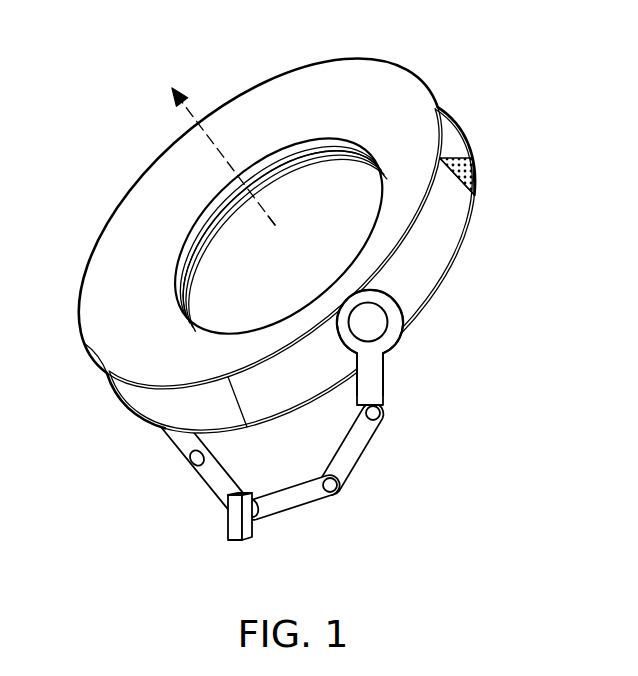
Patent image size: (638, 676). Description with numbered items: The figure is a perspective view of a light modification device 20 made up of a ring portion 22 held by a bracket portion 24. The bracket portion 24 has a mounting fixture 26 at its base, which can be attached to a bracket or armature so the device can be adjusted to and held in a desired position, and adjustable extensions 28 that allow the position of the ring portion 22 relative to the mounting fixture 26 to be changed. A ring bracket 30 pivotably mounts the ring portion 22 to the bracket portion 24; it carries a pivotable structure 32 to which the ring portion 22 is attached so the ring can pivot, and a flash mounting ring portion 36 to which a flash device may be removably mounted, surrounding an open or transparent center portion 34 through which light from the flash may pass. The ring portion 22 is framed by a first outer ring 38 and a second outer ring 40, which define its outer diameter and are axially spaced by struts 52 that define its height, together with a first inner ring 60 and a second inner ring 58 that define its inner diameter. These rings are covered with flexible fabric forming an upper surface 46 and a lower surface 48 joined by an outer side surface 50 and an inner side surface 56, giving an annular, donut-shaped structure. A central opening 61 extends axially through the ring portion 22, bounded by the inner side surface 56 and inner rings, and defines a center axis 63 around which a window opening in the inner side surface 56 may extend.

The light modification device 20 is at (294, 302).
The ring portion 22 is at (318, 60).
The bracket portion 24 is at (258, 518).
The mounting fixture 26 is at (240, 545).
The adjustable extension 28 is at (202, 482).
The ring bracket 30 is at (385, 392).
The pivotable structure 32 is at (392, 348).
The center portion 34 is at (378, 322).
The flash mounting ring portion 36 is at (393, 300).
The first outer ring 38 is at (456, 263).
The second outer ring 40 is at (424, 80).
The upper surface 46 is at (118, 338).
The lower surface 48 is at (298, 412).
The outer side surface 50 is at (468, 160).
The strut 52 is at (478, 185).
The inner side surface 56 is at (220, 205).
The second inner ring 58 is at (174, 270).
The first inner ring 60 is at (205, 270).
The central opening 61 is at (303, 234).
The center axis 63 is at (217, 140).